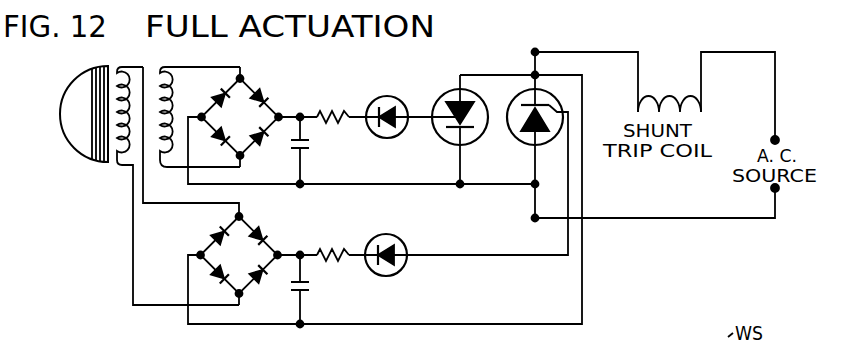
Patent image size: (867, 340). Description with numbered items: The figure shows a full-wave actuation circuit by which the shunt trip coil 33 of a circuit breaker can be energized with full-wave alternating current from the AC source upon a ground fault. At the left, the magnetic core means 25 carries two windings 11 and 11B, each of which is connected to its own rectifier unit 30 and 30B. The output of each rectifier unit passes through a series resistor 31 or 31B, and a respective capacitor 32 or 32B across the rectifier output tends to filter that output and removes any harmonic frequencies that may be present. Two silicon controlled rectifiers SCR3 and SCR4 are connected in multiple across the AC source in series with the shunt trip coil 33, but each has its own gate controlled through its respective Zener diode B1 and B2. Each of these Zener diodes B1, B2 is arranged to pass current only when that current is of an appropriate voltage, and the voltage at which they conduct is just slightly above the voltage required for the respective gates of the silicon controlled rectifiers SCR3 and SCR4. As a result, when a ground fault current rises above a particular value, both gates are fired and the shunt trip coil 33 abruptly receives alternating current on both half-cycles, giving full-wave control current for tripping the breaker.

The magnetic core means 25 is at (60, 114).
The winding 11 is at (173, 108).
The winding 11B is at (116, 167).
The rectifier unit 30 is at (240, 117).
The rectifier unit 30B is at (239, 255).
The resistor 31 is at (332, 111).
The resistor 31B is at (319, 251).
The capacitor 32 is at (306, 150).
The capacitor 32B is at (306, 292).
The Zener diode B1 is at (398, 103).
The Zener diode B2 is at (401, 241).
The silicon controlled rectifier SCR3 is at (448, 92).
The silicon controlled rectifier SCR4 is at (549, 105).
The shunt trip coil 33 is at (658, 99).